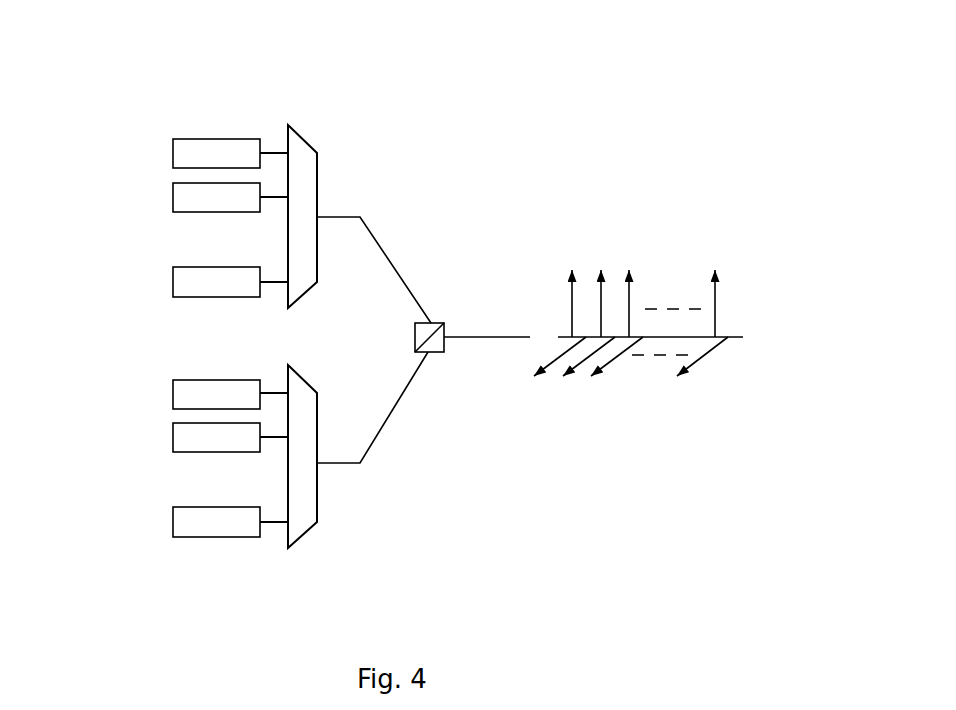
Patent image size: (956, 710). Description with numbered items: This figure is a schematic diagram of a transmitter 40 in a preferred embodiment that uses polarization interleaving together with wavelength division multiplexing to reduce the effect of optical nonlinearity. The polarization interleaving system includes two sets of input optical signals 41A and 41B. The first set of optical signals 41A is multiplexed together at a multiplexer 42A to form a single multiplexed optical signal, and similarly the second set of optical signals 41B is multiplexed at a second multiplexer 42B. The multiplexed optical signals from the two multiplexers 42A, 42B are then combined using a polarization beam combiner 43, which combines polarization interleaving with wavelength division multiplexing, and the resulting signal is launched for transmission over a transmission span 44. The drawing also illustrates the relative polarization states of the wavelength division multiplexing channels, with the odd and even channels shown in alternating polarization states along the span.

The WDM transmission system 40 is at (575, 99).
The input optical signals 41A is at (173, 282).
The input optical signals 41B is at (173, 522).
The multiplexer 42A is at (305, 138).
The multiplexer 42B is at (317, 508).
The polarization beam combiner 43 is at (440, 320).
The transmission span 44 is at (487, 337).